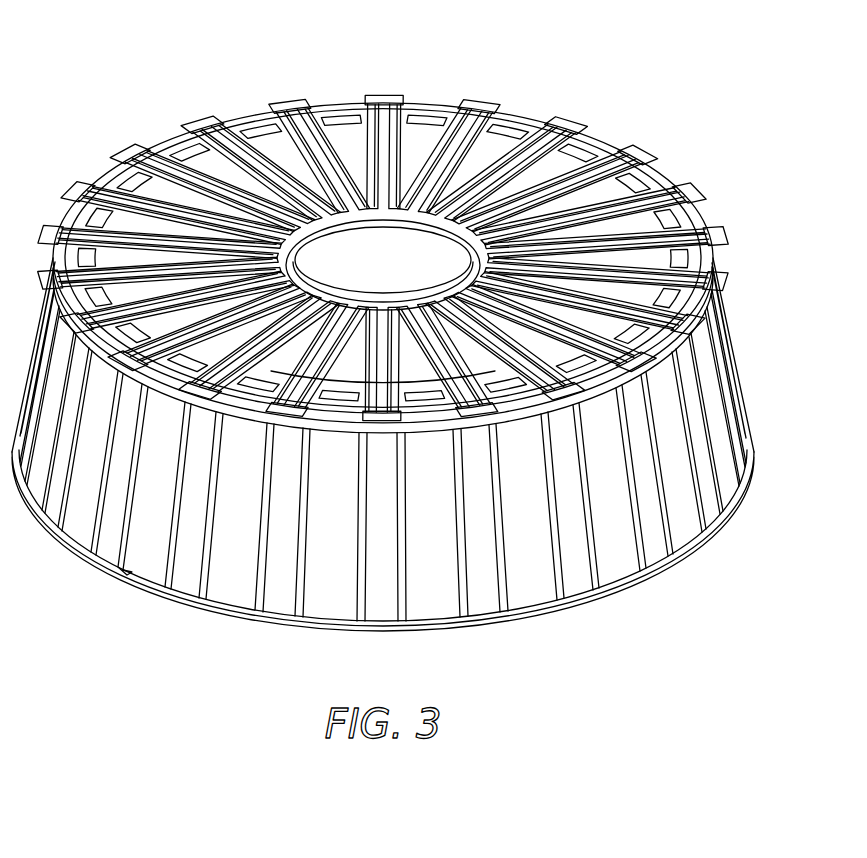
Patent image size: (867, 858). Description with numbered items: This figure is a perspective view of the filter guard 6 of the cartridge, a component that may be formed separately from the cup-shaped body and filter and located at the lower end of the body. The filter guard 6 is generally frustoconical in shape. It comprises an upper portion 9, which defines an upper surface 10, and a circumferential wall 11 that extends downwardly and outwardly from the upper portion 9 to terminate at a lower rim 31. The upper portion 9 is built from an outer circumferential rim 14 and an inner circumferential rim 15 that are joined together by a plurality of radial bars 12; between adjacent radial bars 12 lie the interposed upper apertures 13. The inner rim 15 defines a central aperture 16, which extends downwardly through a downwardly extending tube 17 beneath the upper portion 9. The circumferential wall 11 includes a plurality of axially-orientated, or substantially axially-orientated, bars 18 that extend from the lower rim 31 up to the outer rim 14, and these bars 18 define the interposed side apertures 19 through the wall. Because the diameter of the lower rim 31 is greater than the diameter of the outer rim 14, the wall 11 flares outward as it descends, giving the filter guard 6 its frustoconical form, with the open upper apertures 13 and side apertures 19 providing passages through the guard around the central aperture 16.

The filter guard 6 is at (126, 80).
The upper portion 9 is at (243, 150).
The upper surface 10 is at (385, 121).
The circumferential wall 11 is at (740, 332).
The radial bars 12 is at (488, 164).
The upper apertures 13 is at (426, 154).
The outer circumferential rim 14 is at (540, 181).
The inner circumferential rim 15 is at (455, 243).
The central aperture 16 is at (394, 281).
The downwardly extending tube 17 is at (352, 378).
The axially-orientated bars 18 is at (277, 590).
The side apertures 19 is at (522, 572).
The lower rim 31 is at (137, 570).